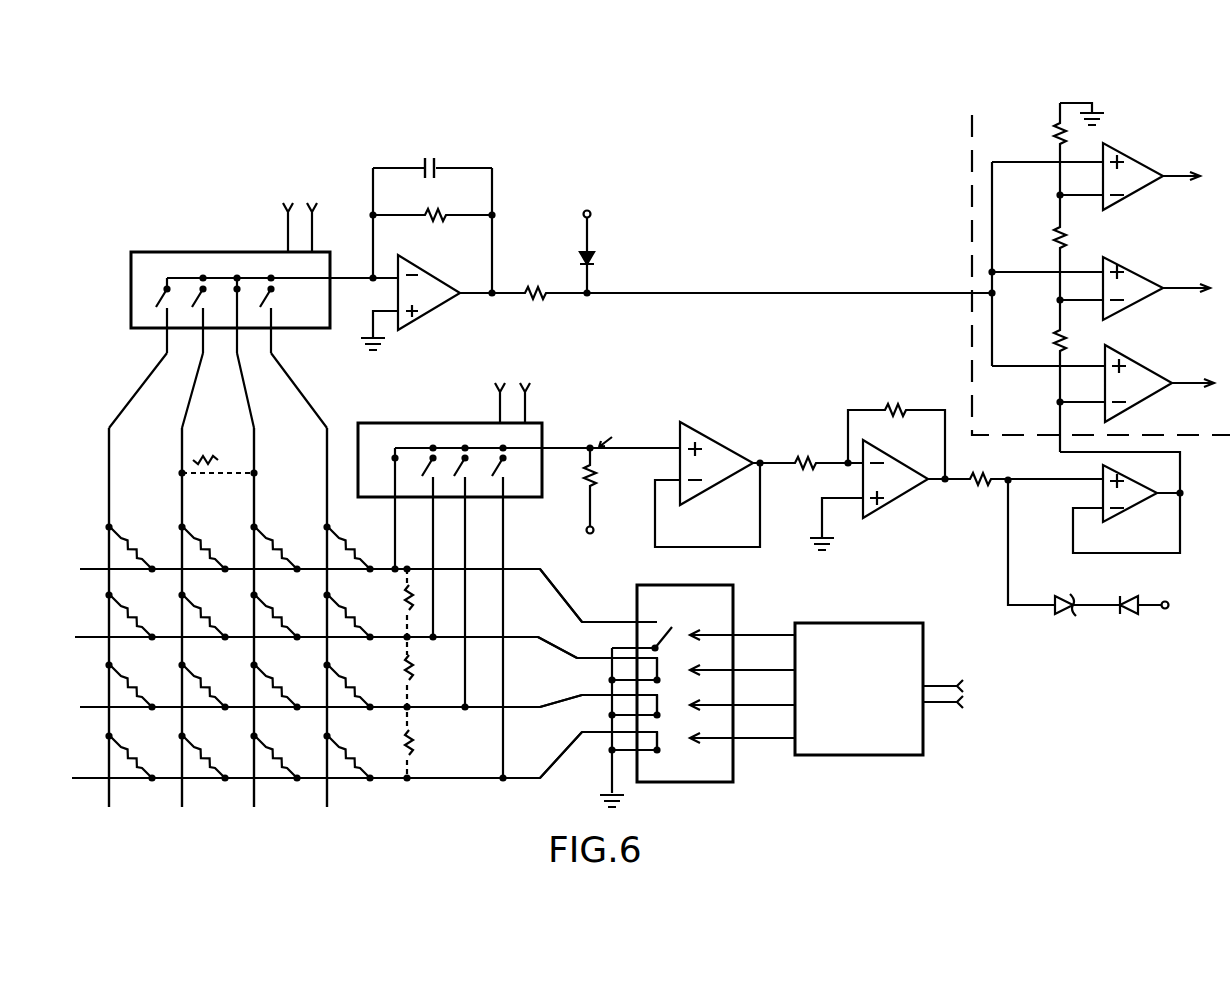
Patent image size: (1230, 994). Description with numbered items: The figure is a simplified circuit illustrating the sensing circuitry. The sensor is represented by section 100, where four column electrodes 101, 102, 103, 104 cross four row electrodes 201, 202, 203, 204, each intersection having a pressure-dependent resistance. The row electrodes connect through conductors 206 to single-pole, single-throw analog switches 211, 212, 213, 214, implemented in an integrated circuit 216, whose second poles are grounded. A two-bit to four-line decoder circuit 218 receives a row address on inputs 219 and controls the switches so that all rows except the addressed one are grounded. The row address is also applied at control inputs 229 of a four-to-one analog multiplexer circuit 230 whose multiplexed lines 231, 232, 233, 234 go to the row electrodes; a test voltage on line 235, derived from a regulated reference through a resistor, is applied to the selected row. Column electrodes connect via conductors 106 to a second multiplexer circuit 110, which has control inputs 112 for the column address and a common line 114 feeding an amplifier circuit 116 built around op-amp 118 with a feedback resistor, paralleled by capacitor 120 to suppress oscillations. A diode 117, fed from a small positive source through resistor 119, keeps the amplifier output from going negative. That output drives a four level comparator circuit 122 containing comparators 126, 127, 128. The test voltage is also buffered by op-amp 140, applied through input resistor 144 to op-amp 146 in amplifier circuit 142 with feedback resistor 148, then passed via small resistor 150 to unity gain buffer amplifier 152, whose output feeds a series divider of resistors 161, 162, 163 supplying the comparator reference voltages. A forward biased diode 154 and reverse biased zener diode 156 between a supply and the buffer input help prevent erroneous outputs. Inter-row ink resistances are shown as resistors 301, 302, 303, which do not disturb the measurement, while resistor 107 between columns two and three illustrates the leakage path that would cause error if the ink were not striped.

The sensor section 100 is at (376, 810).
The column electrode 101 is at (109, 800).
The column electrode 102 is at (182, 800).
The column electrode 103 is at (254, 800).
The column electrode 104 is at (327, 800).
The conductors 106 is at (190, 390).
The inter-column resistor 107 is at (212, 468).
The analog multiplexer circuit 110 is at (131, 290).
The control inputs 112 is at (299, 231).
The common line 114 is at (356, 282).
The amplifier circuit 116 is at (444, 244).
The diode 117 is at (596, 260).
The op-amp 118 is at (446, 312).
The resistor 119 is at (525, 286).
The capacitor 120 is at (436, 164).
The comparator circuit 122 is at (970, 170).
The comparator 126 is at (1140, 162).
The comparator 127 is at (1140, 282).
The comparator 128 is at (1150, 372).
The op-amp 140 is at (714, 444).
The amplifier circuit 142 is at (904, 467).
The input resistor 144 is at (802, 458).
The op-amp 146 is at (894, 498).
The feedback resistor 148 is at (897, 405).
The resistor 150 is at (980, 476).
The buffer amplifier 152 is at (1130, 509).
The diode 154 is at (1134, 618).
The zener diode 156 is at (1066, 618).
The resistor 161 is at (1056, 337).
The resistor 162 is at (1056, 235).
The resistor 163 is at (1054, 132).
The row electrode 201 is at (89, 569).
The row electrode 202 is at (87, 637).
The row electrode 203 is at (91, 707).
The row electrode 204 is at (83, 778).
The conductors 206 is at (550, 629).
The analog switch 211 is at (646, 622).
The analog switch 212 is at (662, 658).
The analog switch 213 is at (662, 693).
The analog switch 214 is at (662, 728).
The integrated circuit 216 is at (738, 602).
The decoder circuit 218 is at (866, 623).
The inputs 219 is at (940, 684).
The row address input 229 is at (530, 405).
The analog multiplexer circuit 230 is at (434, 422).
The multiplexed line 231 is at (394, 517).
The multiplexed line 232 is at (433, 510).
The multiplexed line 233 is at (465, 528).
The multiplexed line 234 is at (505, 552).
The line 235 is at (638, 448).
The inter-row resistor 301 is at (387, 612).
The inter-row resistor 302 is at (412, 670).
The inter-row resistor 303 is at (412, 745).